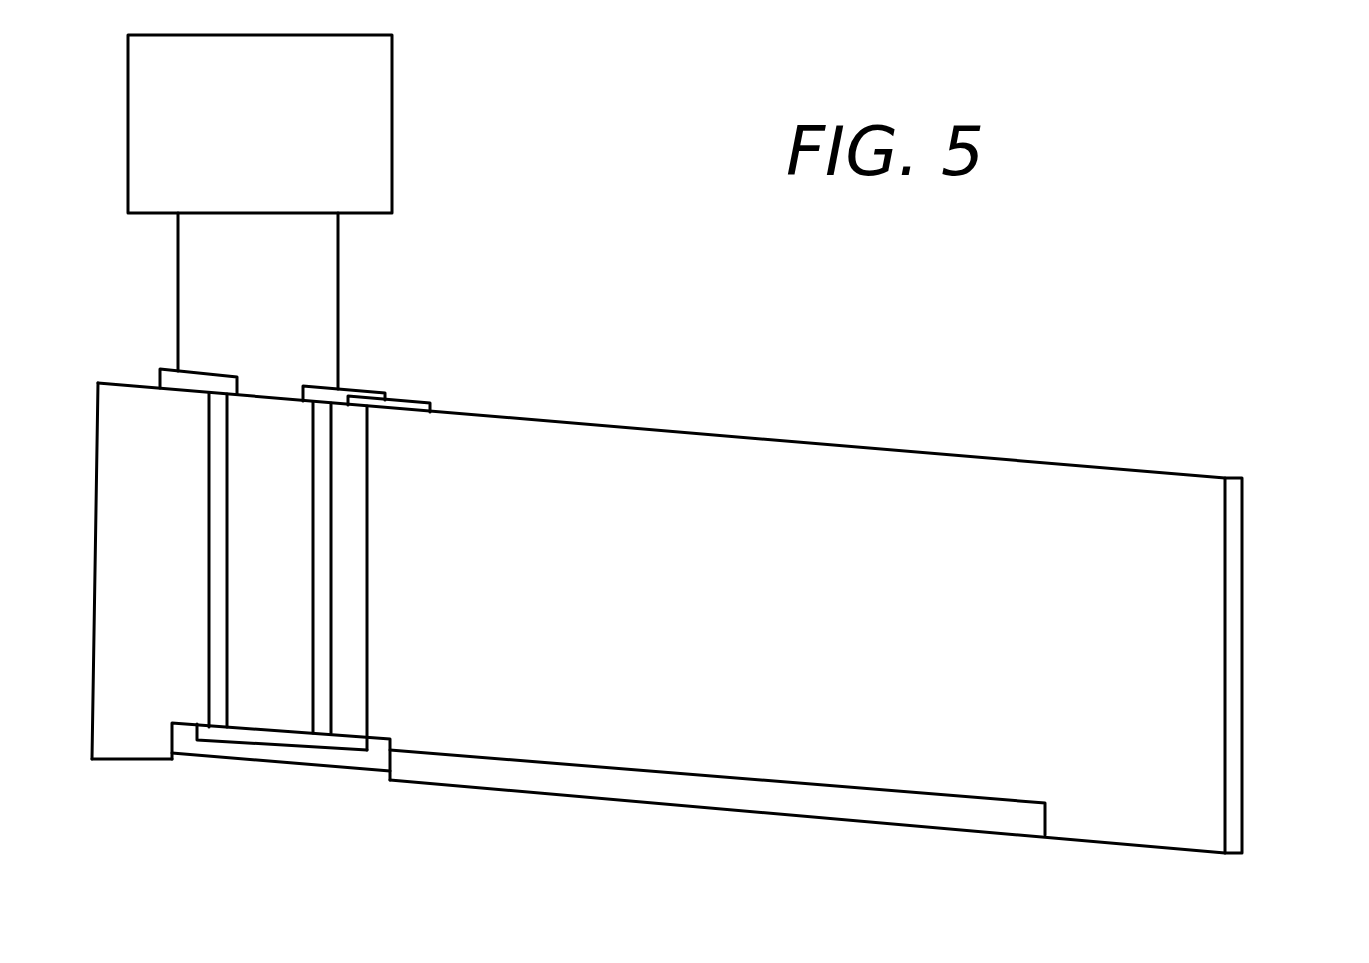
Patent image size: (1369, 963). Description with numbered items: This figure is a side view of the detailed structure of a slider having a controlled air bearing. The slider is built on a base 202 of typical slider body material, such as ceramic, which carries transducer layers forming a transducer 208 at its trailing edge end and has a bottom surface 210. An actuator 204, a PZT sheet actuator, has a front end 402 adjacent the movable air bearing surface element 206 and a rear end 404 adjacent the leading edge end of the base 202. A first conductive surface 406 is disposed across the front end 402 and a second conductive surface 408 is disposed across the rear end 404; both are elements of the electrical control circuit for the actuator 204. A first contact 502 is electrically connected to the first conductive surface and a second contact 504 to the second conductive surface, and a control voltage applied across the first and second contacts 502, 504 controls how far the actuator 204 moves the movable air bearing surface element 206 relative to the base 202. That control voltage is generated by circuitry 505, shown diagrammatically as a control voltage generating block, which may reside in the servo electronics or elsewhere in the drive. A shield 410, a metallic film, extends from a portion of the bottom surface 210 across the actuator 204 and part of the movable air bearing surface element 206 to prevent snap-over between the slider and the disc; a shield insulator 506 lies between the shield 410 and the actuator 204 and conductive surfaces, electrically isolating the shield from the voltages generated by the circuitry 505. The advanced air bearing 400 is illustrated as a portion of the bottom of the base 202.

The base 202 is at (1012, 460).
The actuator 204 is at (280, 647).
The movable air bearing surface element 206 is at (122, 753).
The transducer 208 is at (1238, 478).
The bottom surface 210 is at (612, 830).
The advanced air bearing 400 is at (325, 780).
The front end 402 is at (240, 392).
The rear end 404 is at (302, 387).
The first conductive surface 406 is at (217, 705).
The second conductive surface 408 is at (320, 707).
The shield 410 is at (278, 762).
The first contact 502 is at (186, 372).
The second contact 504 is at (343, 385).
The circuitry 505 is at (392, 168).
The shield insulator 506 is at (348, 718).